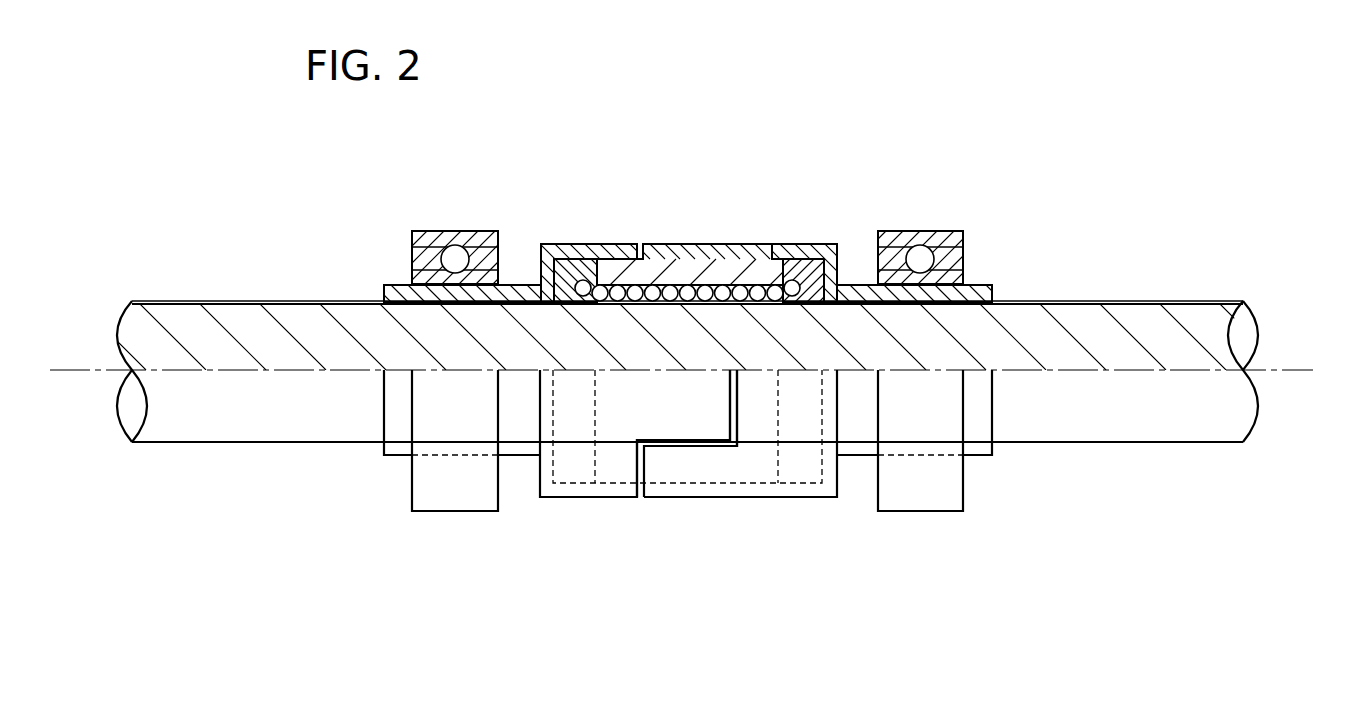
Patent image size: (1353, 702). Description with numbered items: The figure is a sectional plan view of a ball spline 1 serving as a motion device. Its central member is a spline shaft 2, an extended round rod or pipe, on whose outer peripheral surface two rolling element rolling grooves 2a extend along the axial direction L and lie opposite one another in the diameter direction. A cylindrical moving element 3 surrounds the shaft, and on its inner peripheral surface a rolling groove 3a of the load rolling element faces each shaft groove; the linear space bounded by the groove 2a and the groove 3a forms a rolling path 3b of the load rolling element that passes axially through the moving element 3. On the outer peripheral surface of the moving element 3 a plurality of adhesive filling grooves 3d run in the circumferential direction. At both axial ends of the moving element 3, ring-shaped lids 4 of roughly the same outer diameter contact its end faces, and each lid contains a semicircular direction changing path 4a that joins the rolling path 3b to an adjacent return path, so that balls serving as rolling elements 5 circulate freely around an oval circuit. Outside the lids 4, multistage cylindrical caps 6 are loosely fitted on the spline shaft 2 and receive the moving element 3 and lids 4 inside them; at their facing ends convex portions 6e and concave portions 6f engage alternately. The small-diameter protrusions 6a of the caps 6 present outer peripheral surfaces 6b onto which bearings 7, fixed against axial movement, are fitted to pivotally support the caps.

The ball spline 1 is at (1107, 87).
The spline shaft 2 is at (190, 446).
The rolling element rolling groove 2a is at (233, 300).
The moving element 3 is at (691, 266).
The rolling groove of the load rolling element 3a is at (722, 303).
The rolling path of the load rolling element 3b is at (771, 244).
The adhesive filling groove 3d is at (650, 258).
The lid 4 is at (580, 244).
The direction changing path of the rolling element 4a is at (578, 258).
The rolling element 5 is at (668, 300).
The cap 6 is at (567, 506).
The protrusion 6a is at (520, 284).
The outer peripheral surface of the protrusion 6b is at (403, 284).
The convex portion 6e is at (700, 420).
The concave portion 6f is at (643, 497).
The bearing 7 is at (458, 236).
The axial direction L is at (1290, 368).